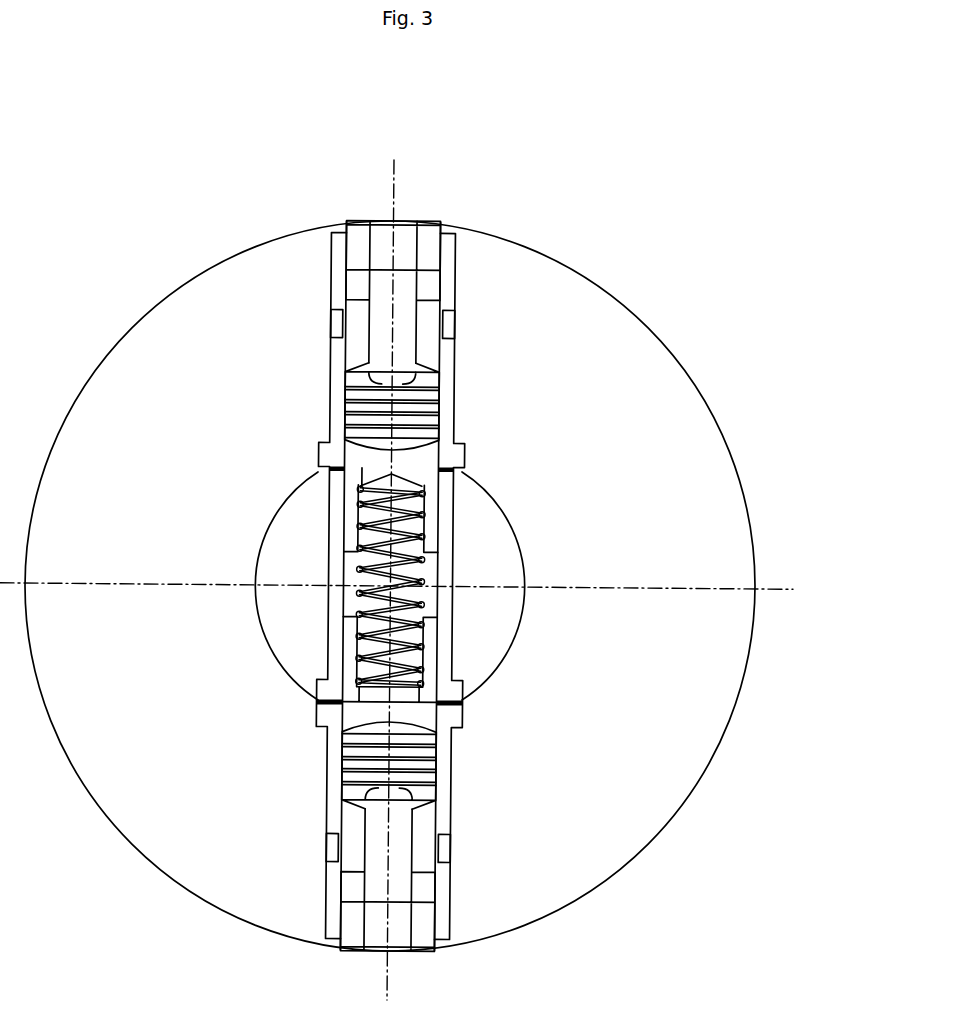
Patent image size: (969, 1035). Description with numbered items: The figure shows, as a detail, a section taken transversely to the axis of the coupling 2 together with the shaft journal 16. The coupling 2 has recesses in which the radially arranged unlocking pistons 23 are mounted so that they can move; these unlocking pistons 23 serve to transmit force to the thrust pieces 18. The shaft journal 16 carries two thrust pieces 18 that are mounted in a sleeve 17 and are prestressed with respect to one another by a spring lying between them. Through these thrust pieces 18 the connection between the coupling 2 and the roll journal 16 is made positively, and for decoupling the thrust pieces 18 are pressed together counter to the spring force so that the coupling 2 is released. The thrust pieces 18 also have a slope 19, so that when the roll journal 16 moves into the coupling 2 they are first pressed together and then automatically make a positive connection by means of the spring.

The coupling 2 is at (652, 491).
The shaft journal 16 is at (476, 628).
The sleeve 17 is at (443, 557).
The thrust pieces 18 is at (425, 470).
The slope 19 is at (428, 449).
The unlocking pistons 23 is at (400, 320).